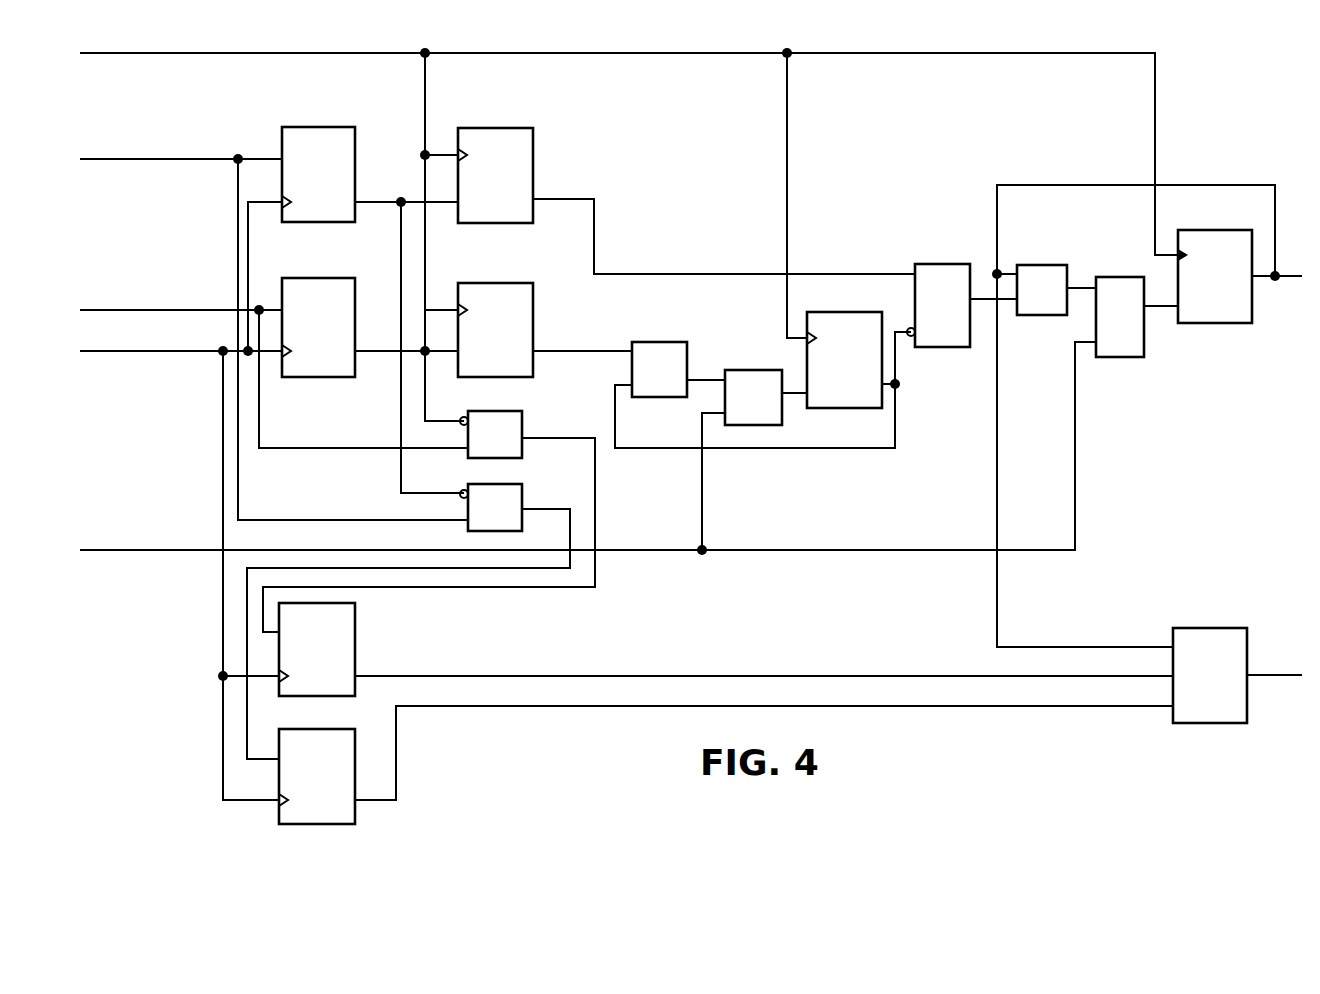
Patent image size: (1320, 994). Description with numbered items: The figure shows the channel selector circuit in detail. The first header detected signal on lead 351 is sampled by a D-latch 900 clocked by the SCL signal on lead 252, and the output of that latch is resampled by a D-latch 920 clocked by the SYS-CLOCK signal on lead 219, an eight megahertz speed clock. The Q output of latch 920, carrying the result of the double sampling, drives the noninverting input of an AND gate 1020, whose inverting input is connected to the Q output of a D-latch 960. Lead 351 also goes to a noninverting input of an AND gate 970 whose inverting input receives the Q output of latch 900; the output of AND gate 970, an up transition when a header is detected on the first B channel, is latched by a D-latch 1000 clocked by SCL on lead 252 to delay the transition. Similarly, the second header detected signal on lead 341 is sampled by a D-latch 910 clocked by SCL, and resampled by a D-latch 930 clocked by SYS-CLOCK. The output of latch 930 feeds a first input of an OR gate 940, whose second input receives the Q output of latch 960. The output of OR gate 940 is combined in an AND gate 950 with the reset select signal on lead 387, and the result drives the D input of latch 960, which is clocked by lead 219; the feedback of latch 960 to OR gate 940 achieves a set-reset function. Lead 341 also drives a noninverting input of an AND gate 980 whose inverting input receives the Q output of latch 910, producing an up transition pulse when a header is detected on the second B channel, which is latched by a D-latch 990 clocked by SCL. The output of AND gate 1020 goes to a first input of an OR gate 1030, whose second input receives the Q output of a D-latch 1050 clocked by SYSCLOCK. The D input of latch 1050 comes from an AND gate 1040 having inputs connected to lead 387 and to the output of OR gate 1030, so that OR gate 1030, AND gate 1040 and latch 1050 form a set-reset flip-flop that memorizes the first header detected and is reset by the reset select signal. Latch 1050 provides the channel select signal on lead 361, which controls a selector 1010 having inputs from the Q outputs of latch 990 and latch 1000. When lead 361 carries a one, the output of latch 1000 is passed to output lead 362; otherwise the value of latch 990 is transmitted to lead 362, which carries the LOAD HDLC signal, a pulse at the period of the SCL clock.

The lead 219 is at (130, 57).
The lead 351 is at (147, 163).
The lead 341 is at (208, 306).
The lead 252 is at (150, 355).
The lead 387 is at (152, 555).
The D-latch 900 is at (323, 130).
The D-latch 910 is at (323, 282).
The D-latch 920 is at (512, 127).
The D-latch 930 is at (512, 283).
The OR gate 940 is at (660, 342).
The AND gate 950 is at (770, 368).
The D-latch 960 is at (845, 312).
The AND gate 970 is at (512, 484).
The AND gate 980 is at (512, 411).
The D-latch 990 is at (356, 627).
The D-latch 1000 is at (370, 722).
The selector 1010 is at (1170, 637).
The AND gate 1020 is at (930, 264).
The OR gate 1030 is at (1025, 265).
The AND gate 1040 is at (1110, 357).
The D-latch 1050 is at (1200, 230).
The lead 361 is at (1288, 282).
The lead 362 is at (1273, 672).